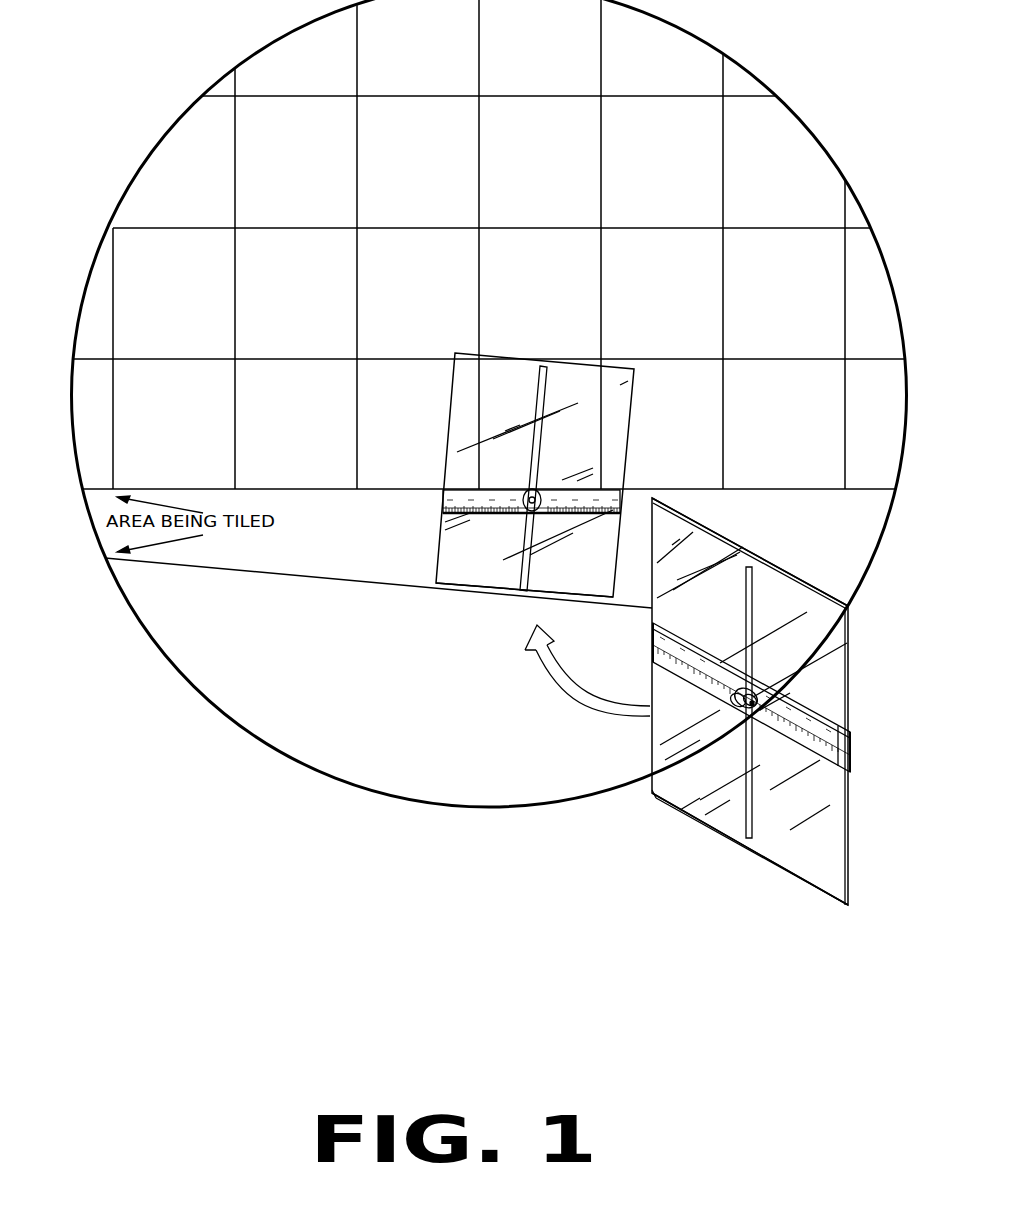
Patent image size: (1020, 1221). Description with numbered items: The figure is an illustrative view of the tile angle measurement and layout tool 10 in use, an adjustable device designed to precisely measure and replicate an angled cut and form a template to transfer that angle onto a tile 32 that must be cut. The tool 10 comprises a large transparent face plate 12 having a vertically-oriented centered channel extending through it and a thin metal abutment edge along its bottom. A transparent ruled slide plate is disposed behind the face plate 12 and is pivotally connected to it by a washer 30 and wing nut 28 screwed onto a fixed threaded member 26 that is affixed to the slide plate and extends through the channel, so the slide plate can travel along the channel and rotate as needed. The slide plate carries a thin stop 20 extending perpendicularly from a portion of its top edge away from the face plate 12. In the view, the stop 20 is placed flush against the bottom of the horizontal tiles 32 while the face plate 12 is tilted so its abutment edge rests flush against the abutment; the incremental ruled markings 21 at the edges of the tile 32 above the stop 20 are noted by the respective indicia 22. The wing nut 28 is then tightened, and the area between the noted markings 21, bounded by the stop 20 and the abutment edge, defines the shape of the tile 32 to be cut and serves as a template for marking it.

The tile angle measurement and layout tool 10 is at (648, 342).
The transparent faceplate 12 is at (449, 427).
The stop 20 is at (823, 703).
The incremental markings 21 is at (838, 767).
The indicia 22 is at (667, 650).
The fixed threaded member 26 is at (737, 710).
The wing nut 28 is at (753, 707).
The washer 30 is at (752, 690).
The tile 32 is at (787, 490).